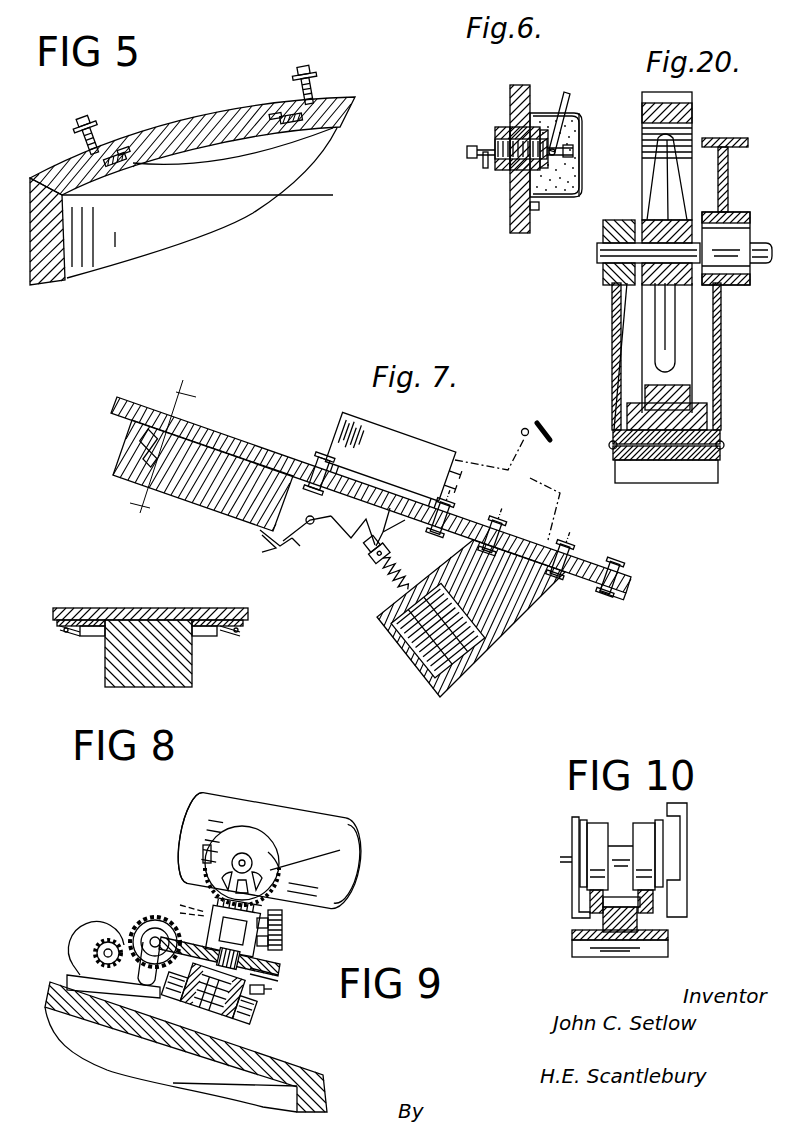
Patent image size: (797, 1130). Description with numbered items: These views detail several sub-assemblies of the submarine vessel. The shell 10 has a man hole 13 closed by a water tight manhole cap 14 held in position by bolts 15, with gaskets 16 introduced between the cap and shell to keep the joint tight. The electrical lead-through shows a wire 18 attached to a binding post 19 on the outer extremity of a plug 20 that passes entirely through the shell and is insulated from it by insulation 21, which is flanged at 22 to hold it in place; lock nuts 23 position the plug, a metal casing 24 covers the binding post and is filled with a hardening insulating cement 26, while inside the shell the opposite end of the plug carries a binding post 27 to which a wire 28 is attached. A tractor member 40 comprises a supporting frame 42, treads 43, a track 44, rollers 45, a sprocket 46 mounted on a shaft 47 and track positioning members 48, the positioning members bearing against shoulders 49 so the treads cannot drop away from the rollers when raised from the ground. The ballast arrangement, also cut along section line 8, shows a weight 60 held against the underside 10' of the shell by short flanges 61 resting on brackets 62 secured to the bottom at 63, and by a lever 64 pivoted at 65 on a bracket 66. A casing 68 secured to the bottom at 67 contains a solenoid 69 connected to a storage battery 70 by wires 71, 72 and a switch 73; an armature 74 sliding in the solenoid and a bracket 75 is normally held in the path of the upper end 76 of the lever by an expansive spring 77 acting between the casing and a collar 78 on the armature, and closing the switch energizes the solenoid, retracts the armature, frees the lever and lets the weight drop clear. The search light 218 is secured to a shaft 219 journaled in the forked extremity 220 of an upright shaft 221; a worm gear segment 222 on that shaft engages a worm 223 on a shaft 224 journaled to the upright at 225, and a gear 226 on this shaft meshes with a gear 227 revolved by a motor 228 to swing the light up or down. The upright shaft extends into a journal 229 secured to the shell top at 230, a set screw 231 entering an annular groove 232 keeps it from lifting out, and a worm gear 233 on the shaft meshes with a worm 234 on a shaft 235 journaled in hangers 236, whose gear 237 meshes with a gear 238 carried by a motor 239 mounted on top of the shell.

In FIG. 5, the shell 10 is at (183, 215).
In FIG. 6, the shell 10 is at (516, 141).
In FIG. 5, the man hole 13 is at (228, 157).
In FIG. 5, the manhole cap 14 is at (200, 118).
In FIG. 5, the bolts 15 is at (90, 126).
In FIG. 5, the gaskets 16 is at (118, 165).
In FIG. 6, the wire 18 is at (567, 93).
In FIG. 6, the binding post 19 is at (570, 172).
In FIG. 6, the plug 20 is at (512, 195).
In FIG. 6, the insulation 21 is at (506, 128).
In FIG. 6, the flange 22 is at (540, 126).
In FIG. 6, the lock nuts 23 is at (496, 132).
In FIG. 6, the metal casing 24 is at (582, 146).
In FIG. 6, the insulating cement 26 is at (580, 112).
In FIG. 6, the binding post 27 is at (466, 150).
In FIG. 6, the wire 28 is at (483, 166).
In FIG. 20, the tractor member 40 is at (618, 462).
In FIG. 20, the supporting frames 42 is at (729, 190).
In FIG. 20, the treads 43 is at (672, 478).
In FIG. 10, the treads 43 is at (616, 947).
In FIG. 10, the track 44 is at (619, 845).
In FIG. 10, the rollers 45 is at (596, 835).
In FIG. 20, the sprockets 46 is at (690, 125).
In FIG. 20, the shaft 47 is at (762, 265).
In FIG. 20, the track positioning members 48 is at (612, 368).
In FIG. 10, the track positioning members 48 is at (572, 915).
In FIG. 20, the shoulders 49 is at (700, 418).
In FIG. 10, the shoulders 49 is at (590, 903).
In FIG. 7, the section line 8— 8 is at (159, 448).
In FIG. 7, the underside of shell 10' is at (371, 495).
In FIG. 8, the underside of shell 10' is at (150, 597).
In FIG. 7, the weights 60 is at (212, 500).
In FIG. 8, the weights 60 is at (185, 678).
In FIG. 8, the short flanges 61 is at (96, 607).
In FIG. 8, the brackets 62 is at (92, 637).
In FIG. 8, the securing point 63 is at (66, 634).
In FIG. 7, the lever 64 is at (283, 549).
In FIG. 7, the pivot 65 is at (310, 526).
In FIG. 7, the bracket 66 is at (338, 490).
In FIG. 7, the securing point 67 is at (600, 600).
In FIG. 7, the casing 68 is at (537, 622).
In FIG. 7, the solenoid 69 is at (414, 665).
In FIG. 7, the storage battery 70 is at (420, 452).
In FIG. 7, the wire 71 is at (490, 512).
In FIG. 7, the wire 72 is at (543, 484).
In FIG. 7, the switch 73 is at (551, 436).
In FIG. 7, the armature 74 is at (368, 554).
In FIG. 7, the bracket 75 is at (392, 536).
In FIG. 7, the upper end of lever 76 is at (367, 531).
In FIG. 7, the expansive spring 77 is at (395, 590).
In FIG. 7, the collar 78 is at (377, 562).
In FIG. 9, the search light 218 is at (318, 822).
In FIG. 9, the shaft 219 is at (250, 852).
In FIG. 9, the forked extremity 220 is at (241, 850).
In FIG. 9, the vertical shaft 221 is at (260, 962).
In FIG. 9, the worm gear segment 222 is at (340, 850).
In FIG. 9, the worm 223 is at (190, 904).
In FIG. 9, the shaft 224 is at (275, 866).
In FIG. 9, the journal 225 is at (215, 858).
In FIG. 9, the gear 226 is at (282, 928).
In FIG. 9, the gear 227 is at (270, 955).
In FIG. 9, the motor 228 is at (210, 931).
In FIG. 9, the journal 229 is at (280, 1020).
In FIG. 9, the securing point 230 is at (180, 1012).
In FIG. 9, the set screw 231 is at (264, 990).
In FIG. 9, the annular groove 232 is at (220, 1010).
In FIG. 9, the worm gear 233 is at (265, 978).
In FIG. 9, the worm 234 is at (105, 990).
In FIG. 9, the shaft 235 is at (140, 935).
In FIG. 9, the hangers 236 is at (150, 998).
In FIG. 9, the gear 237 is at (153, 918).
In FIG. 9, the gear 238 is at (94, 951).
In FIG. 9, the motor 239 is at (90, 925).